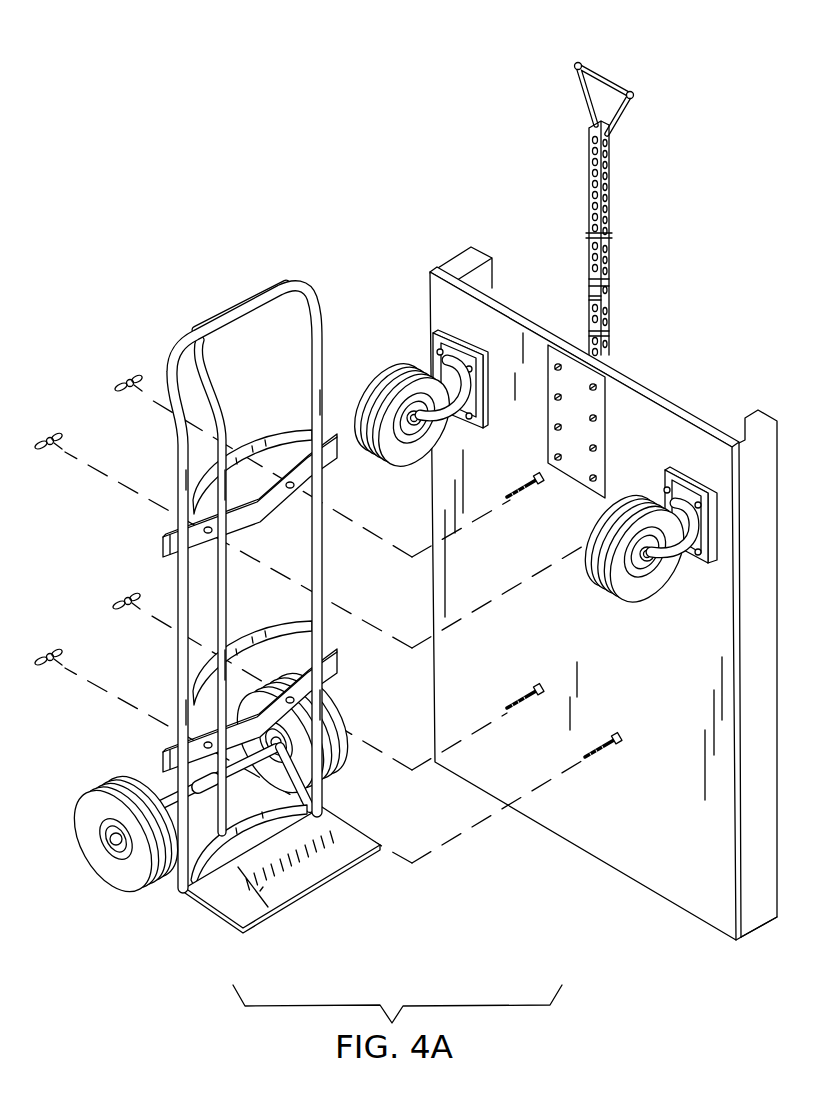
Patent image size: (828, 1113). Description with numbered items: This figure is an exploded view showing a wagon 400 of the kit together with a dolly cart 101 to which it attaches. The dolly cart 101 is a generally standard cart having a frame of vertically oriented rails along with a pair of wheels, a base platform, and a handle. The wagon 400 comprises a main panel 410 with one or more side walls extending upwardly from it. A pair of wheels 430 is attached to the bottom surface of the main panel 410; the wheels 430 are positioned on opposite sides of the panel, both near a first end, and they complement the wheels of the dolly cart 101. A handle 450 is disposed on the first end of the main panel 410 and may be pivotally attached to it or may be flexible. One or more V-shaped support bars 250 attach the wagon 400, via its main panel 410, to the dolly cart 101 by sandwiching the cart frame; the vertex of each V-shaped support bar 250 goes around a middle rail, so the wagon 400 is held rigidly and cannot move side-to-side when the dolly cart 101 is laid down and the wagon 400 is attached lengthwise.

The wagon 400 is at (294, 150).
The dolly cart 101 is at (180, 633).
The V-shaped support bar 250 is at (162, 541).
The main panel 410 is at (598, 845).
The wheels 430 is at (376, 380).
The handle 450 is at (612, 175).